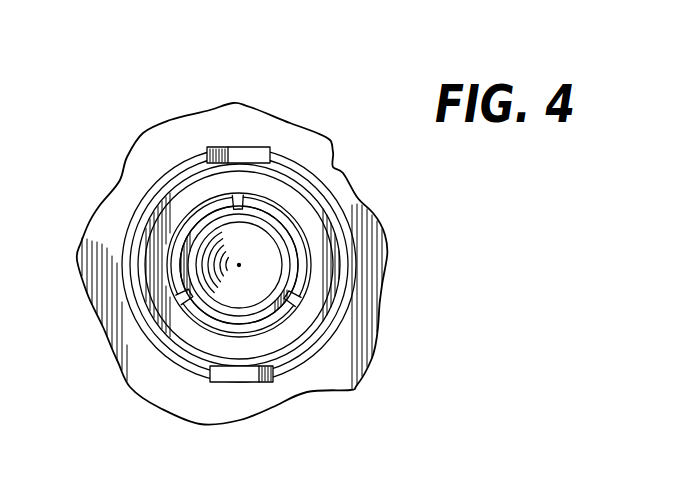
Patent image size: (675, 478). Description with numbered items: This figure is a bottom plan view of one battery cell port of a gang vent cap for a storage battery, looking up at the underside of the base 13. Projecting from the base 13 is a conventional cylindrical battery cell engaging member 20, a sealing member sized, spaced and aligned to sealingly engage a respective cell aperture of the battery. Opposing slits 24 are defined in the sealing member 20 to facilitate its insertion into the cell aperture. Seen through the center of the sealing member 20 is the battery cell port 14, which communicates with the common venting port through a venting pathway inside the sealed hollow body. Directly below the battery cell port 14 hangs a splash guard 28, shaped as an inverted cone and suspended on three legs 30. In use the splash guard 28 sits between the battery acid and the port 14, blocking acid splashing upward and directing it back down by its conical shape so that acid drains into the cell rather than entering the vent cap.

The base 13 is at (247, 113).
The battery cell port 14 is at (310, 252).
The battery cell engaging member 20 is at (310, 185).
The slit 24 is at (258, 152).
The splash guard 28 is at (210, 243).
The leg 30 is at (238, 197).